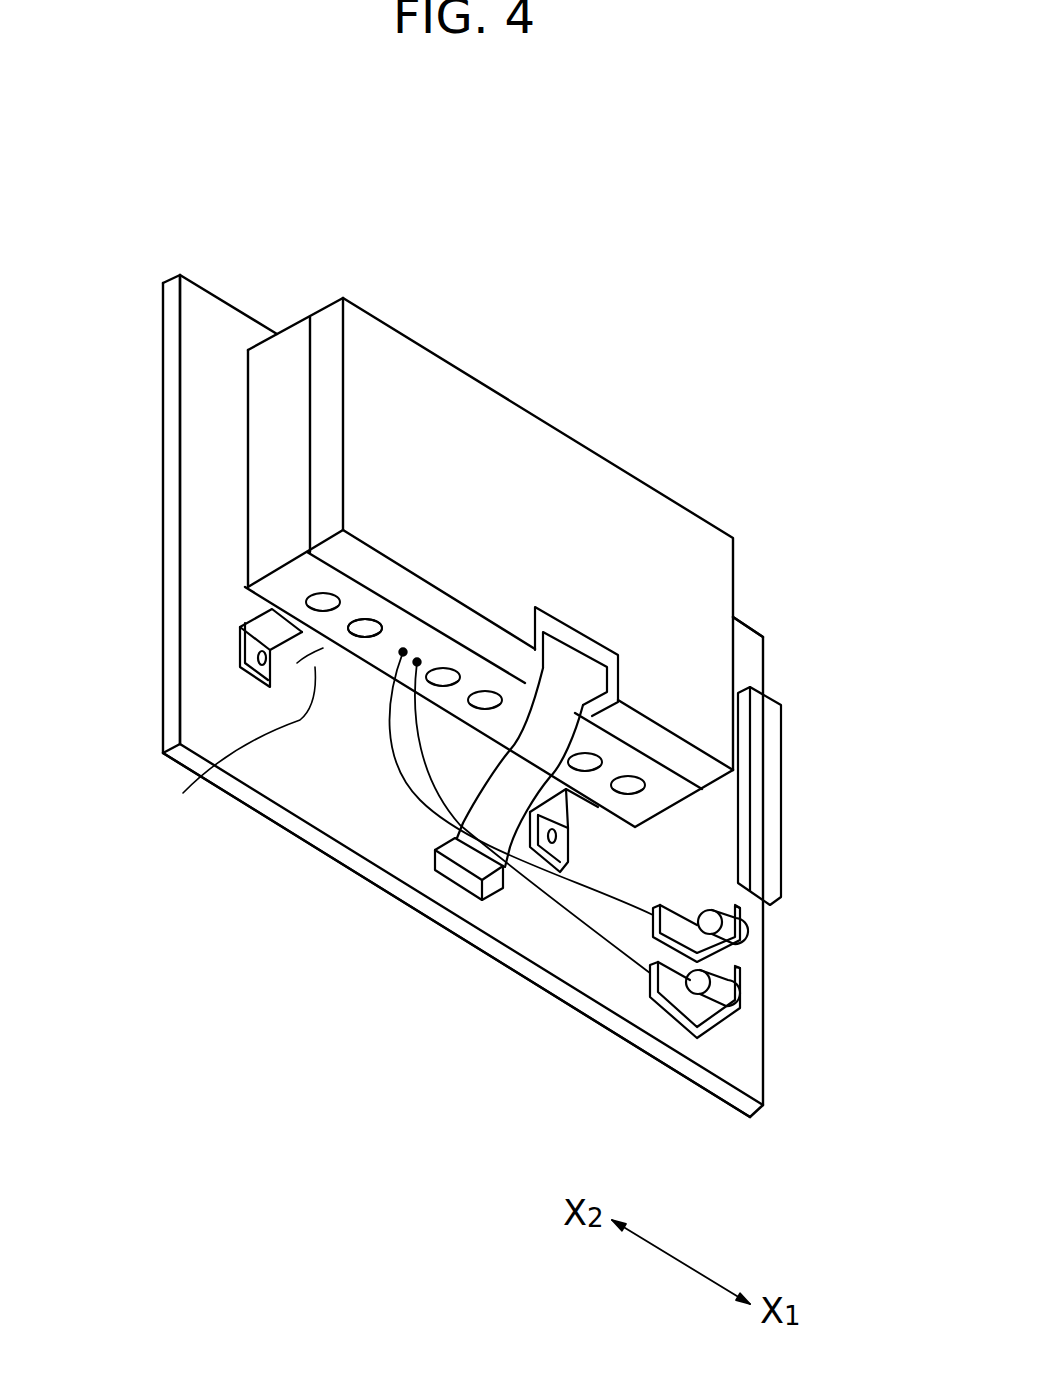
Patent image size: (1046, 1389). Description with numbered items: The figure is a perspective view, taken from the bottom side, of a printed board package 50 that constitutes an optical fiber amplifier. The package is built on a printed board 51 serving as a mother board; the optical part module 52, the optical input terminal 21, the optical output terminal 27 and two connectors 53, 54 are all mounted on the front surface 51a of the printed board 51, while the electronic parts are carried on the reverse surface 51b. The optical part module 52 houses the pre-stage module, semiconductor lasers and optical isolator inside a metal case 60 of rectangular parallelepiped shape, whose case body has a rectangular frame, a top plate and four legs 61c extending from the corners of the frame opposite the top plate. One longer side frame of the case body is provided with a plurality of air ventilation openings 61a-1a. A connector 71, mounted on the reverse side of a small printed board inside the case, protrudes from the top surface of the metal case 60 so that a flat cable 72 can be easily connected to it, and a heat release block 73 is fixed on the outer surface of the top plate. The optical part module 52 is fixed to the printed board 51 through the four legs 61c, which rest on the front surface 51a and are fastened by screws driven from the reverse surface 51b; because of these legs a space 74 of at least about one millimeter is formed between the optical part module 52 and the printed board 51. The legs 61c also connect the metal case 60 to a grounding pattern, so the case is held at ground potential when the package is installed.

The printed board package 50 is at (805, 159).
The printed board 51 is at (163, 325).
The front surface 51a is at (202, 482).
The reverse surface 51b is at (200, 577).
The optical part module 52 is at (532, 396).
The connector 53 is at (772, 800).
The connector 54 is at (477, 882).
The metal case 60 is at (297, 325).
The air ventilation openings 61a-1a is at (366, 638).
The legs 61c is at (240, 645).
The connector 71 is at (583, 652).
The flat cable 72 is at (497, 783).
The heat release block 73 is at (693, 520).
The space 74 is at (240, 745).
The optical output terminal 27 is at (727, 927).
The optical input terminal 21 is at (712, 997).